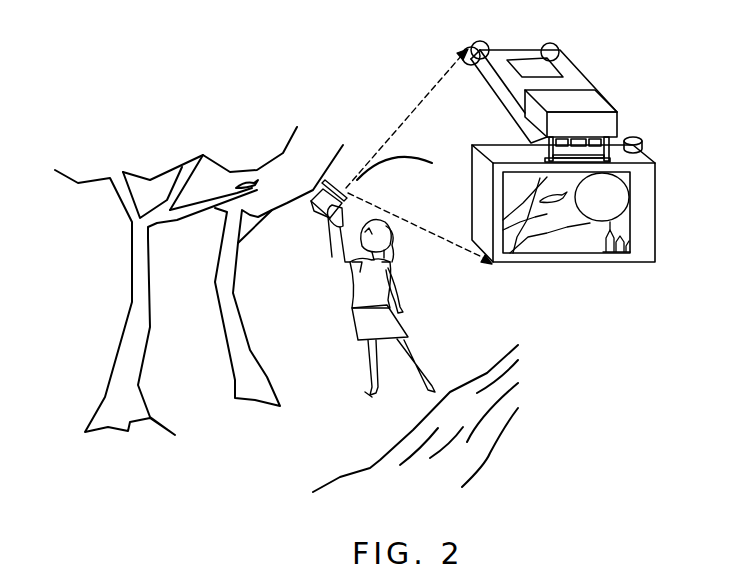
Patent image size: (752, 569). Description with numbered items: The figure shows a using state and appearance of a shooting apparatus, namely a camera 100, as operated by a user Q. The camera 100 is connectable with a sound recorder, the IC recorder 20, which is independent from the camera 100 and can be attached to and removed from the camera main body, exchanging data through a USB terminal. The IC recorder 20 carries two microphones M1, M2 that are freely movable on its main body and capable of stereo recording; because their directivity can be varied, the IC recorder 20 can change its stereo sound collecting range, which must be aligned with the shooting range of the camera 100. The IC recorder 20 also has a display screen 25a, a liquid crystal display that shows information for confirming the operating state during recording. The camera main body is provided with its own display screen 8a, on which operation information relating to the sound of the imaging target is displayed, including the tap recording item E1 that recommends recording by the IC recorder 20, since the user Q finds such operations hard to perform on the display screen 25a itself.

The microphone M1 is at (470, 45).
The microphone M2 is at (547, 43).
The display screen 25a is at (543, 62).
The IC recorder 20 is at (582, 67).
The camera 100 is at (650, 195).
The display screen 8a is at (525, 238).
The tap recording E1 is at (597, 223).
The user Q is at (393, 262).